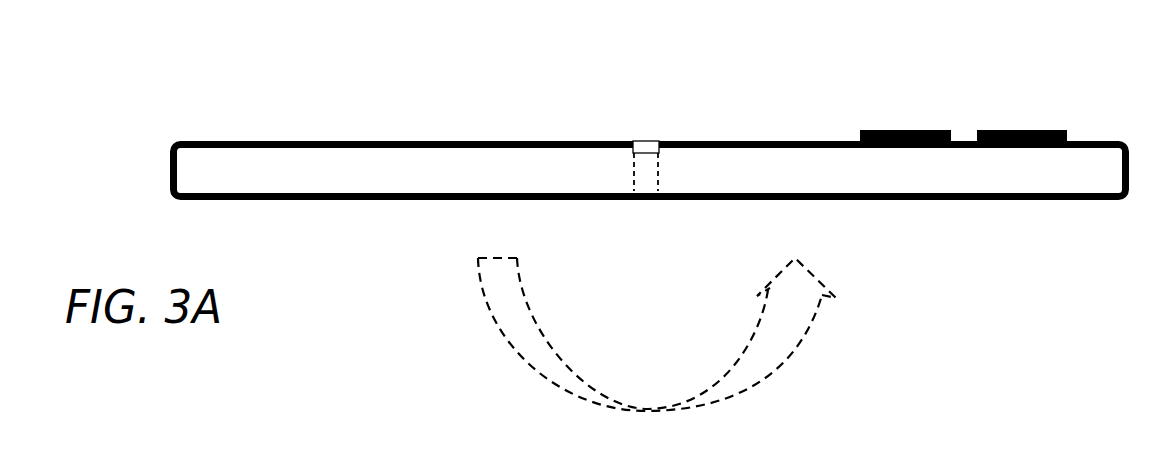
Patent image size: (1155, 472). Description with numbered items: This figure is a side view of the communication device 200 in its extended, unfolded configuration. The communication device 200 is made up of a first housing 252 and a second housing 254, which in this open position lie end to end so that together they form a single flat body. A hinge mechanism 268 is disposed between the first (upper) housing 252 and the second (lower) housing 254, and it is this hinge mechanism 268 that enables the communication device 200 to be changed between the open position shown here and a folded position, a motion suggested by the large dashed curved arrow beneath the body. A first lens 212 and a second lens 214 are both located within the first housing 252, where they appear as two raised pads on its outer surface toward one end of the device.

The communication device 200 is at (578, 46).
The first lens 212 is at (1052, 128).
The second lens 214 is at (887, 128).
The first housing 252 is at (730, 153).
The second housing 254 is at (315, 155).
The hinge mechanism 268 is at (635, 142).